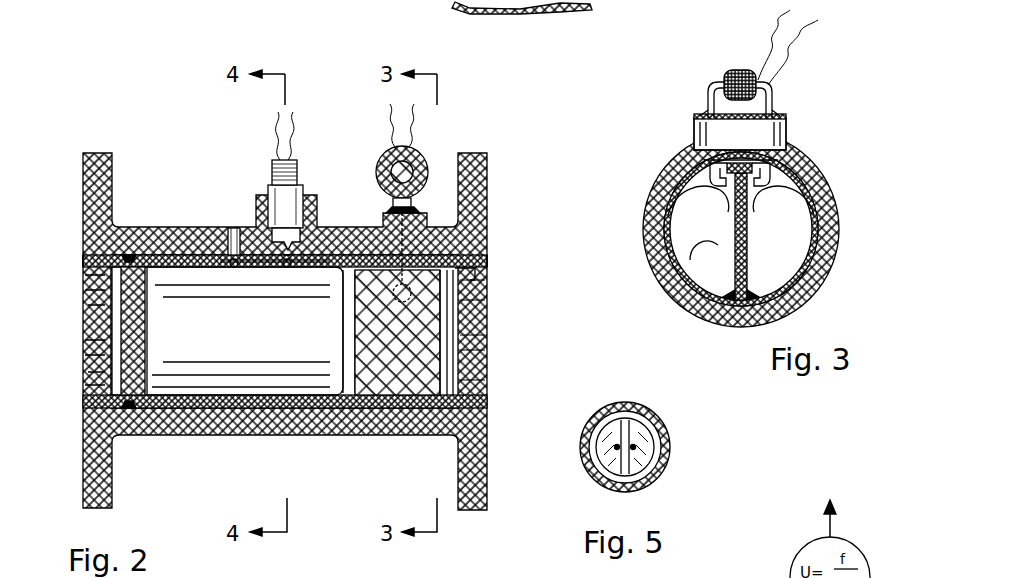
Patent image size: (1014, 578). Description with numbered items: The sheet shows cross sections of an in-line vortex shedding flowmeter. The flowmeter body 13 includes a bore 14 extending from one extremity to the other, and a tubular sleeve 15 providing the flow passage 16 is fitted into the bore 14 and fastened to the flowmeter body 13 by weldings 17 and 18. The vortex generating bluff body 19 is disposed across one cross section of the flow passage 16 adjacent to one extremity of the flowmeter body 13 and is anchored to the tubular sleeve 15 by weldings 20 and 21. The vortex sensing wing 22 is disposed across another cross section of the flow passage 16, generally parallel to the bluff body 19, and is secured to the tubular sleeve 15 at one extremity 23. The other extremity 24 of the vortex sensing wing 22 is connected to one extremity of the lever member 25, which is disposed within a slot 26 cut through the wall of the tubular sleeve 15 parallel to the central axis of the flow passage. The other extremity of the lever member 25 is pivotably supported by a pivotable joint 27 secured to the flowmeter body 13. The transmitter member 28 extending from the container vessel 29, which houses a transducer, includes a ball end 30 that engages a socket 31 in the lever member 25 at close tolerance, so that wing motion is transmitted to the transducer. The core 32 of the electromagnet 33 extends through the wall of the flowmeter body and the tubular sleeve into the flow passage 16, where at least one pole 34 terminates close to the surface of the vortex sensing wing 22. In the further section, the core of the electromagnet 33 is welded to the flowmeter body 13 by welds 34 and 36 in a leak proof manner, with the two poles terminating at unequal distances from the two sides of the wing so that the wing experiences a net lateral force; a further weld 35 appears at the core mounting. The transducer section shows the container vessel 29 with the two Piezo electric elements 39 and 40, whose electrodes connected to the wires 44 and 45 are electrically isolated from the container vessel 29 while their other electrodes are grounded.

In FIG. 2, the flowmeter body 13 is at (152, 240).
In FIG. 3, the flowmeter body 13 is at (830, 176).
In FIG. 2, the bore 14 is at (160, 275).
In FIG. 2, the tubular sleeve 15 is at (170, 380).
In FIG. 3, the tubular sleeve 15 is at (677, 278).
In FIG. 2, the flow passage 16 is at (190, 330).
In FIG. 2, the welding 17 is at (83, 258).
In FIG. 2, the welding 18 is at (489, 258).
In FIG. 2, the vortex generating bluff body 19 is at (130, 325).
In FIG. 2, the welding 20 is at (130, 256).
In FIG. 2, the welding 21 is at (128, 402).
In FIG. 2, the vortex sensing wing 22 is at (392, 343).
In FIG. 3, the vortex sensing wing 22 is at (750, 240).
In FIG. 2, the extremity of the vortex sensing wing 23 is at (405, 372).
In FIG. 2, the other extremity of the vortex sensing wing 24 is at (450, 307).
In FIG. 2, the lever member 25 is at (320, 288).
In FIG. 3, the lever member 25 is at (750, 203).
In FIG. 2, the slot 26 is at (472, 283).
In FIG. 3, the slot 26 is at (755, 150).
In FIG. 2, the pivotable joint 27 is at (212, 283).
In FIG. 2, the transmitter member 28 is at (293, 243).
In FIG. 2, the container vessel 29 is at (285, 208).
In FIG. 5, the container vessel 29 is at (627, 400).
In FIG. 2, the ball end 30 is at (295, 272).
In FIG. 2, the socket 31 is at (283, 270).
In FIG. 2, the core 32 is at (420, 200).
In FIG. 3, the core 32 is at (708, 100).
In FIG. 2, the electromagnet 33 is at (412, 150).
In FIG. 3, the electromagnet 33 is at (743, 82).
In FIG. 2, the pole 34 is at (440, 345).
In FIG. 3, the pole 34 is at (672, 173).
In FIG. 3, the bail 35 is at (707, 108).
In FIG. 3, the weld 36 is at (780, 110).
In FIG. 5, the Piezo electric element 39 is at (612, 458).
In FIG. 5, the Piezo electric element 40 is at (657, 457).
In FIG. 5, the wire 44 is at (617, 445).
In FIG. 5, the wire 45 is at (632, 445).